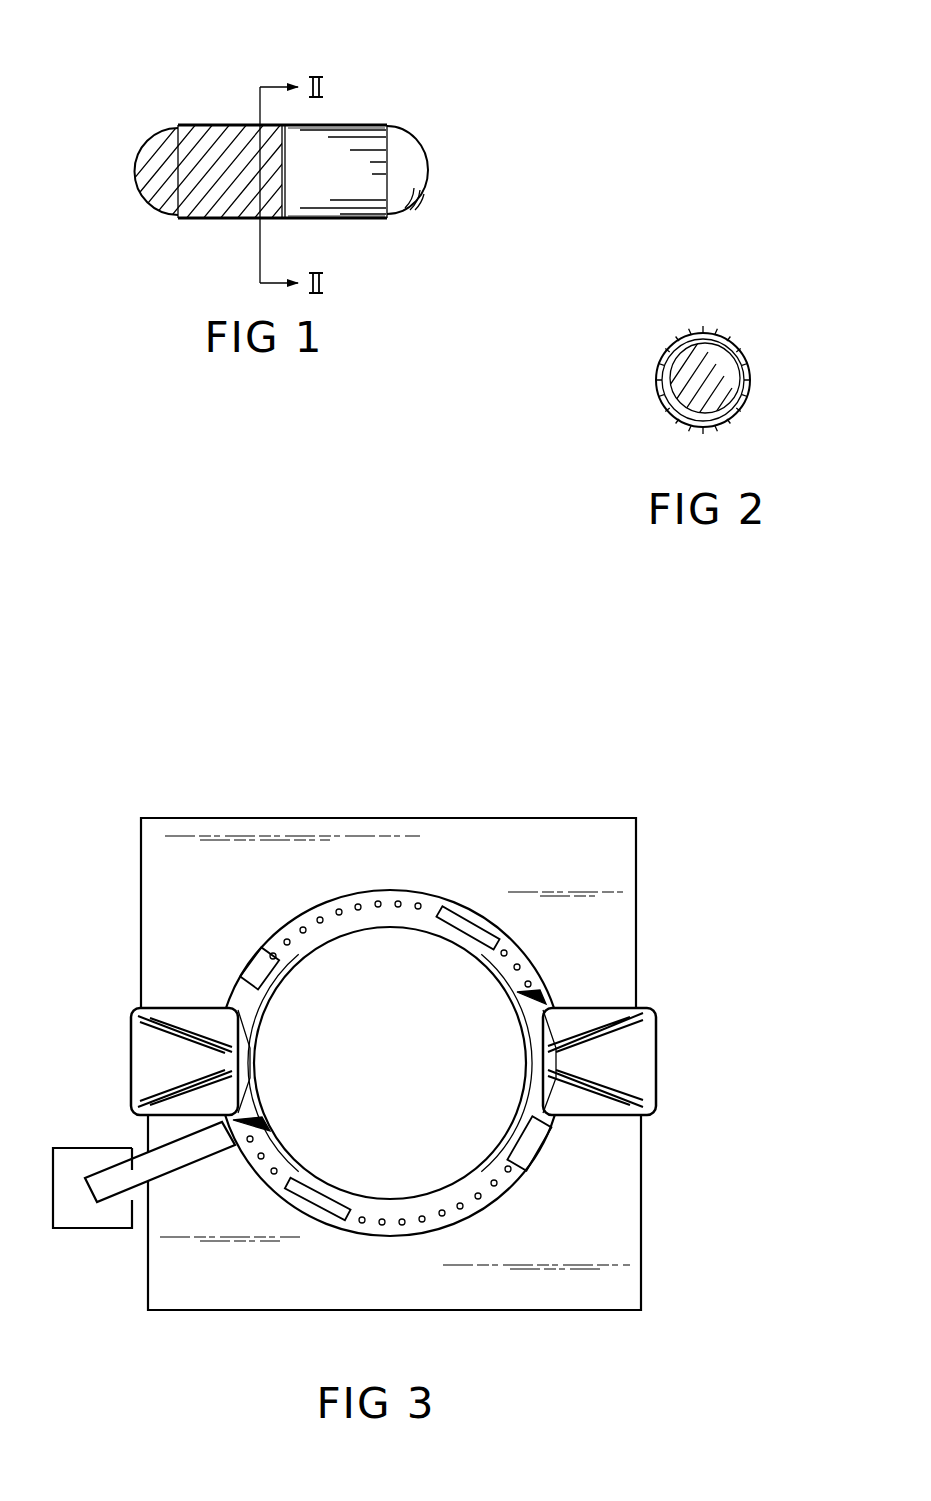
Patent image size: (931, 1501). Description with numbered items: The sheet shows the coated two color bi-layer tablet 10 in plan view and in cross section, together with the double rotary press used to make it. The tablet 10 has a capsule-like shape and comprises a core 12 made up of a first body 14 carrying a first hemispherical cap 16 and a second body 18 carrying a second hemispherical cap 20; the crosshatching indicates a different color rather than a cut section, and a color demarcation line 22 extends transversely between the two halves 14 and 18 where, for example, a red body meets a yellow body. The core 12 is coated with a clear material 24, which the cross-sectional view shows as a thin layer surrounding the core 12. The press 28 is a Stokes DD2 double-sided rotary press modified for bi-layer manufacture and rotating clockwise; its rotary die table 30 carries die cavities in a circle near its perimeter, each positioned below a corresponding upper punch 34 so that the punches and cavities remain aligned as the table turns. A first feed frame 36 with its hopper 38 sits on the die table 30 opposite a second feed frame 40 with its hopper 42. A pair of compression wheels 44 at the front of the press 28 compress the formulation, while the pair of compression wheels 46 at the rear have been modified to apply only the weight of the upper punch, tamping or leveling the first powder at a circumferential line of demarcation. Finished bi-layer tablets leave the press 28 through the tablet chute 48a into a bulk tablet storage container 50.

In FIG. 1, the bi-layer tablet 10 is at (132, 140).
In FIG. 2, the bi-layer tablet 10 is at (657, 343).
In FIG. 1, the core 12 is at (217, 222).
In FIG. 2, the core 12 is at (728, 367).
In FIG. 1, the first body 14 is at (206, 141).
In FIG. 1, the first hemispherical cap 16 is at (162, 189).
In FIG. 1, the second body 18 is at (353, 193).
In FIG. 2, the second body 18 is at (686, 381).
In FIG. 1, the second hemispherical cap 20 is at (418, 125).
In FIG. 1, the color demarcation line 22 is at (288, 189).
In FIG. 1, the clear material 24 is at (302, 188).
In FIG. 2, the clear material 24 is at (697, 424).
In FIG. 3, the press 28 is at (308, 810).
In FIG. 3, the rotary die table 30 is at (411, 886).
In FIG. 3, the upper punches 34 is at (423, 1228).
In FIG. 3, the first feed frame 36 is at (245, 985).
In FIG. 3, the hopper 38 is at (225, 1030).
In FIG. 3, the second feed frame 40 is at (549, 1140).
In FIG. 3, the hopper 42 is at (554, 1027).
In FIG. 3, the compression wheels 44 is at (301, 1198).
In FIG. 3, the compression wheels 46 is at (478, 914).
In FIG. 3, the tablet chute 48a is at (142, 1163).
In FIG. 3, the bulk tablet storage container 50 is at (80, 1216).